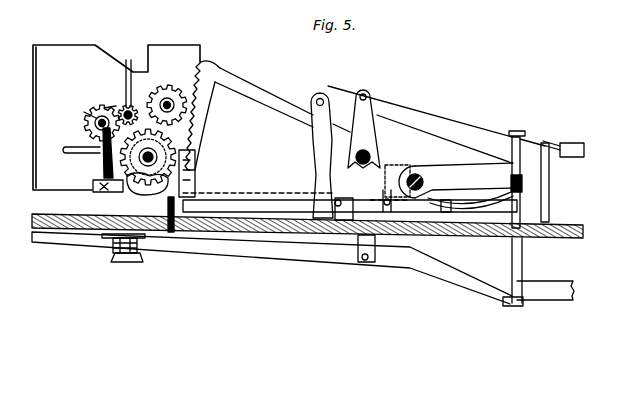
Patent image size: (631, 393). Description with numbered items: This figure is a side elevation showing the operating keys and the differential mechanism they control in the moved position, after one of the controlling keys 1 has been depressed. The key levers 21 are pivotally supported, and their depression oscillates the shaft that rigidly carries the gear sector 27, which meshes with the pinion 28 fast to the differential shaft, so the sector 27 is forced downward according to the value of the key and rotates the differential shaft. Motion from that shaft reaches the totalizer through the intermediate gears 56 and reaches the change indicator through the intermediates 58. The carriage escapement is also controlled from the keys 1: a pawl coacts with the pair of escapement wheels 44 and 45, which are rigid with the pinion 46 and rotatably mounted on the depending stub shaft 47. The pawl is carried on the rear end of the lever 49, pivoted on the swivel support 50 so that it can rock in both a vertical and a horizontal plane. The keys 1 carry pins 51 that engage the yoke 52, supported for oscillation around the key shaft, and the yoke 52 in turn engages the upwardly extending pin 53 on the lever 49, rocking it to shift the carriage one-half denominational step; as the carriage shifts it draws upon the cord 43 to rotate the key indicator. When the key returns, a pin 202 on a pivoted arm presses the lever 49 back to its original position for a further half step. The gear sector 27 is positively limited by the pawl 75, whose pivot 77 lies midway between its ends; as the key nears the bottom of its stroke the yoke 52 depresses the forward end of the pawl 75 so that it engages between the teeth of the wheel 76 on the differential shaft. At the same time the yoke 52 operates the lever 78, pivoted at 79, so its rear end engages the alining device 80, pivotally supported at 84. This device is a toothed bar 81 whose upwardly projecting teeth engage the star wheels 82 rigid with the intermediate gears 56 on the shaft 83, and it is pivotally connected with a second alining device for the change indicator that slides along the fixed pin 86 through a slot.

The controlling keys 1 is at (592, 150).
The key levers 21 is at (428, 122).
The gear sector 27 is at (220, 67).
The pinion 28 is at (185, 164).
The cord 43 is at (552, 208).
The escapement wheel 44 is at (108, 237).
The escapement wheel 45 is at (103, 240).
The pinion 46 is at (110, 257).
The stub shaft 47 is at (132, 262).
The lever 49 is at (248, 246).
The swivel support 50 is at (365, 262).
The pins 51 is at (553, 163).
The yoke 52 is at (447, 170).
The pin 53 is at (522, 260).
The intermediate gears 56 is at (119, 83).
The intermediates 58 is at (167, 96).
The pawl 75 is at (140, 194).
The wheel 76 is at (103, 192).
The pivot 77 is at (323, 234).
The lever 78 is at (447, 212).
The pivot 79 is at (398, 172).
The alining device 80 is at (100, 170).
The toothed bar 81 is at (95, 120).
The star wheels 82 is at (101, 108).
The shaft 83 is at (91, 116).
The pivotal support 84 is at (68, 150).
The fixed pin 86 is at (136, 104).
The pin 202 is at (163, 236).